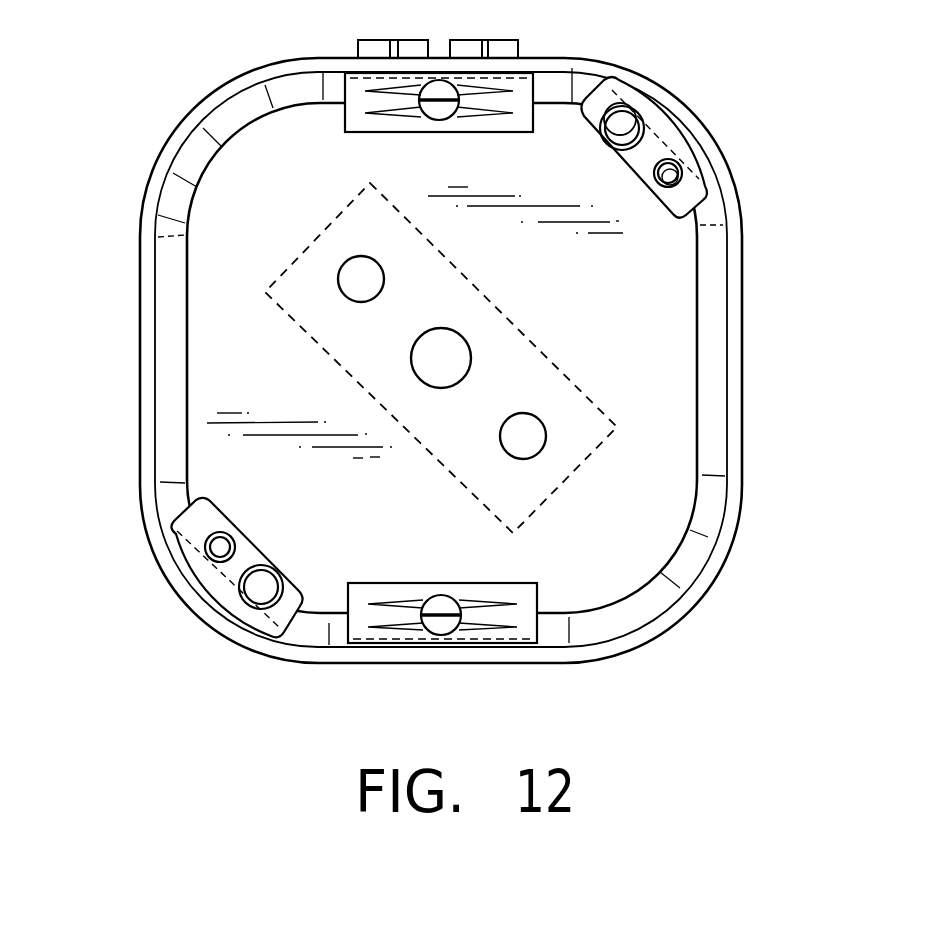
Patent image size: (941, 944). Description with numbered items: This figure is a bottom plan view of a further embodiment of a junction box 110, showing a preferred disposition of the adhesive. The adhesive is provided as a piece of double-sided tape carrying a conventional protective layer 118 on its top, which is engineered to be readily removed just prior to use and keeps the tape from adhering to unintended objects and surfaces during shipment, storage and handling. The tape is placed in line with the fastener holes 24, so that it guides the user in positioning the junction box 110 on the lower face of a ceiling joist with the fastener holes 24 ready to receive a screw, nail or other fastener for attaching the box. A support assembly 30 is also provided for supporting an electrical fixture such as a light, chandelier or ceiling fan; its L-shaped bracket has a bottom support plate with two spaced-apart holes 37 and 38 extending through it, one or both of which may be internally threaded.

The junction box 110 is at (798, 102).
The support assembly 30 is at (716, 210).
The hole 37 is at (605, 124).
The hole 38 is at (668, 196).
The protective layer 118 is at (598, 449).
The hole 24 is at (523, 462).